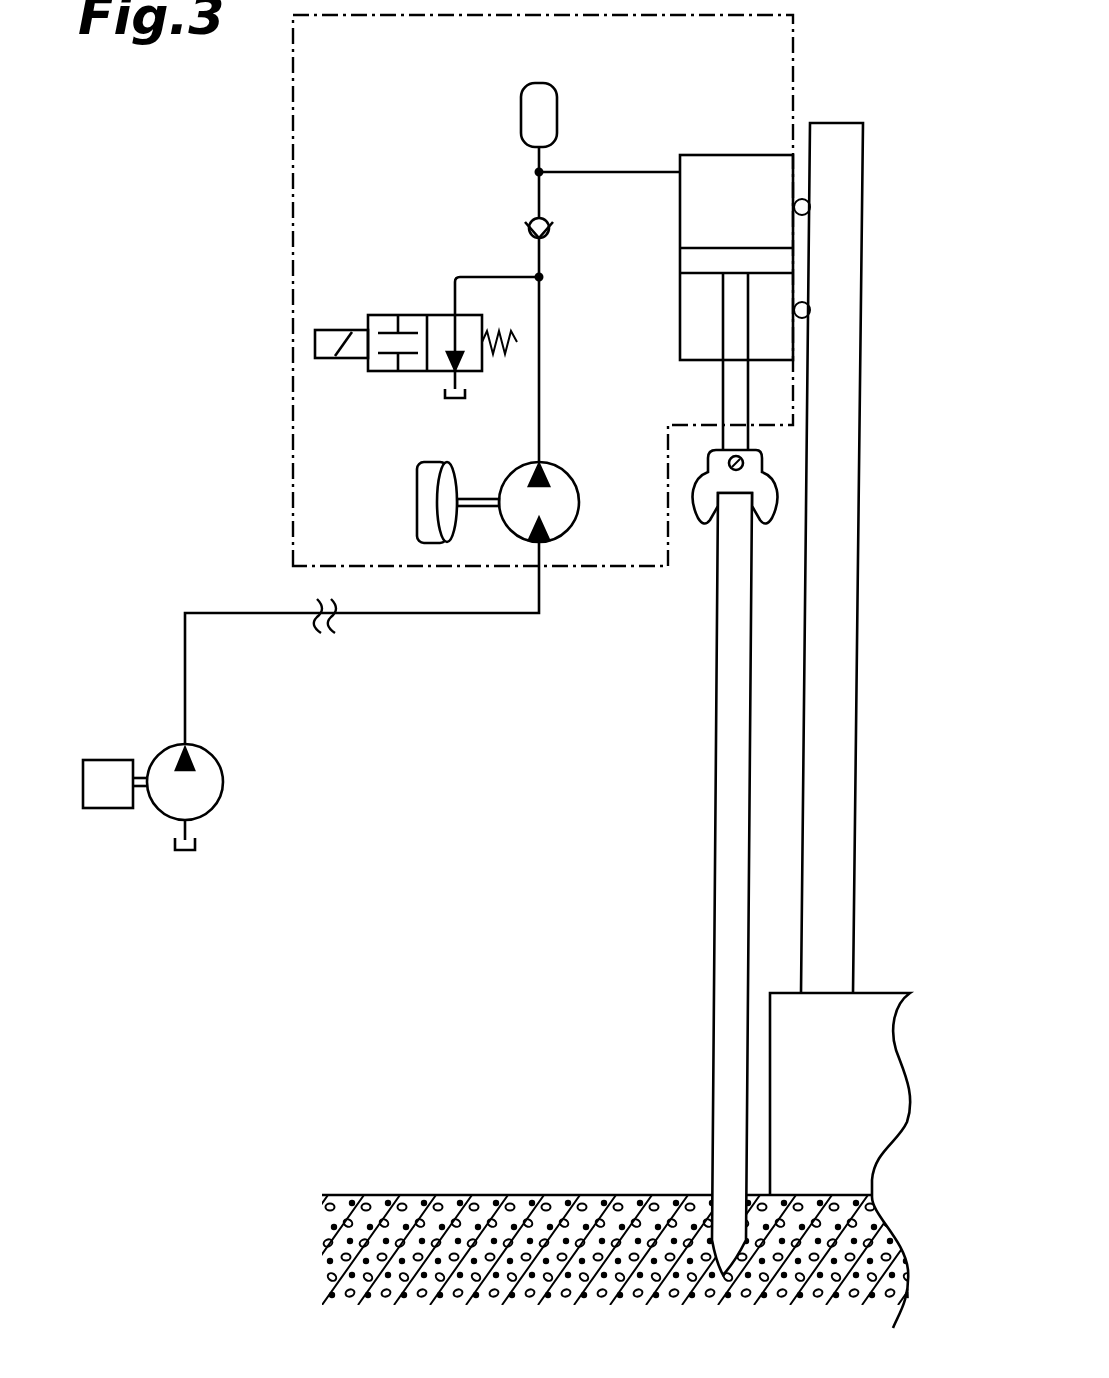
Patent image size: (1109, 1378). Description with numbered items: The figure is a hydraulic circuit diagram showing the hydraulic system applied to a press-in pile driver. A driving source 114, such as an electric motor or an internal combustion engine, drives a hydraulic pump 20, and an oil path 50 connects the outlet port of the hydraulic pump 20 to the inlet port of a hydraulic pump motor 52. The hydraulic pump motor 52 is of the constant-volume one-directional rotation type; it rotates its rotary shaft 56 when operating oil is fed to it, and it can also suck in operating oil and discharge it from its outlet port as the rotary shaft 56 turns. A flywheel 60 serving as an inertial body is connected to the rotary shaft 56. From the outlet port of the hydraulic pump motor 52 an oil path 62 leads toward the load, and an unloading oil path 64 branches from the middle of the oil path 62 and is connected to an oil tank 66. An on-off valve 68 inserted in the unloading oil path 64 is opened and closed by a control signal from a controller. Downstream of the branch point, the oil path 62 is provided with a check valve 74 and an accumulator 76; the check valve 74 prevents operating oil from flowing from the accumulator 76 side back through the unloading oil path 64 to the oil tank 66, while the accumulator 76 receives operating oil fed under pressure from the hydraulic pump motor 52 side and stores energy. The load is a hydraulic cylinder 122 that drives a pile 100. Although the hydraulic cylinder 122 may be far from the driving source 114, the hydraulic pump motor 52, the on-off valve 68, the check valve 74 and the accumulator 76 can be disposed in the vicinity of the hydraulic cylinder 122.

The hydraulic pump 20 is at (224, 782).
The oil path 50 is at (348, 617).
The hydraulic pump motor 52 is at (579, 499).
The rotary shaft 56 is at (483, 507).
The flywheel 60 is at (417, 510).
The oil path 62 is at (542, 312).
The unloading oil path 64 is at (487, 277).
The oil tank 66 is at (444, 393).
The on-off valve 68 is at (387, 315).
The check valve 74 is at (552, 229).
The accumulator 76 is at (542, 82).
The pile 100 is at (714, 790).
The driving source 114 is at (108, 760).
The hydraulic cylinder 122 is at (737, 153).